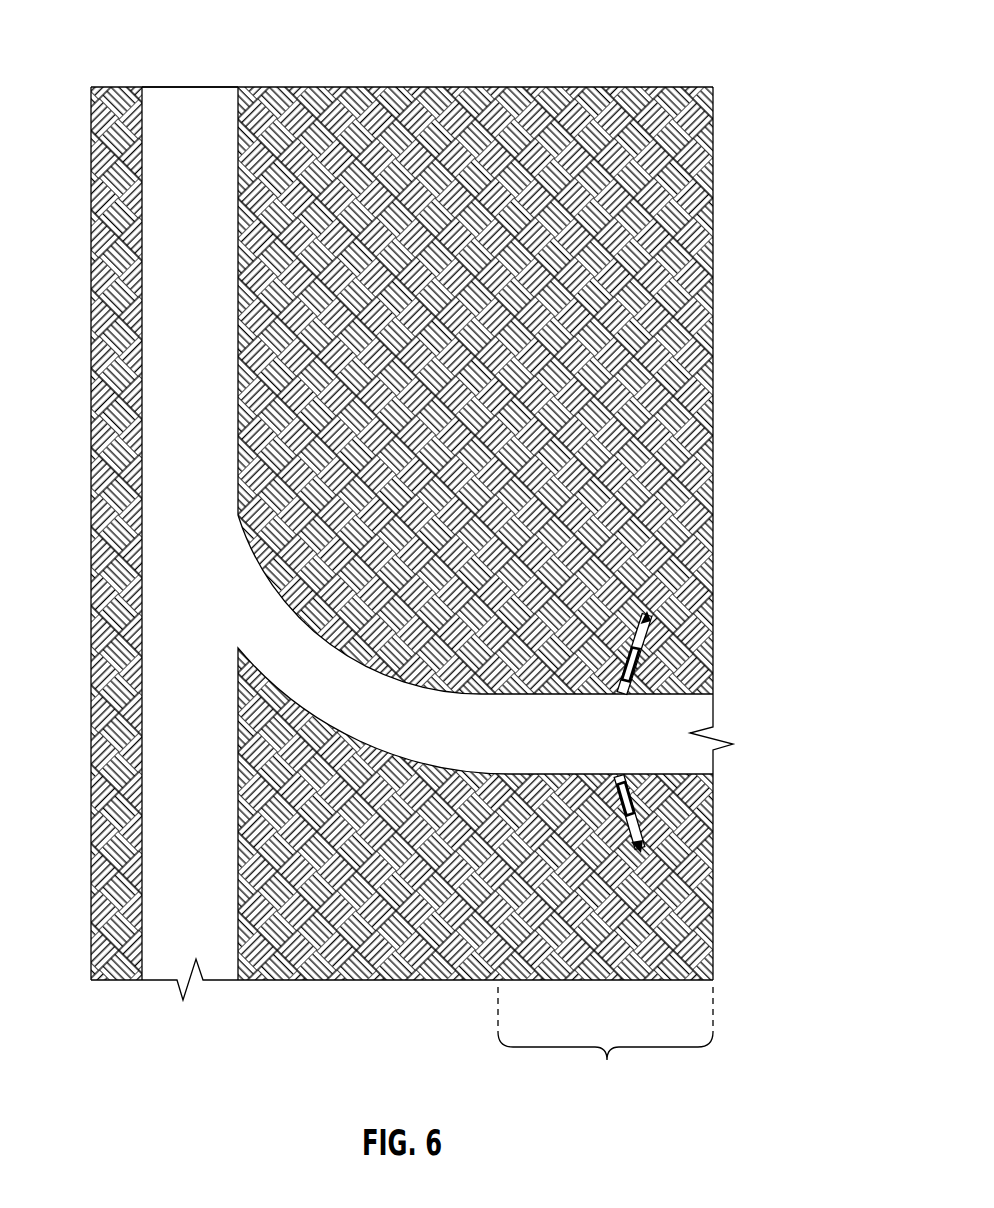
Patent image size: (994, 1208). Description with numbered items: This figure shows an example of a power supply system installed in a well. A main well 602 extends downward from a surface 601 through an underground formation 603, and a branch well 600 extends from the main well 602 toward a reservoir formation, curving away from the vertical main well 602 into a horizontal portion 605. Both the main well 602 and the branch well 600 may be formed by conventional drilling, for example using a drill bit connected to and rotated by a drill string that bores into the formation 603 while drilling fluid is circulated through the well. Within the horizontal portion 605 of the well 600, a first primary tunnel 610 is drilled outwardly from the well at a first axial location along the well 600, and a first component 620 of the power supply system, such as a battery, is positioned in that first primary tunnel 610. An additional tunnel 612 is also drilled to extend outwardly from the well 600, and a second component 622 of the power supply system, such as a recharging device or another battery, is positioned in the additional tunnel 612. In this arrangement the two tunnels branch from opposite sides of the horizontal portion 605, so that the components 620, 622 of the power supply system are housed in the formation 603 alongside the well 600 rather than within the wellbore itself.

The well 600 is at (493, 751).
The surface 601 is at (592, 86).
The main well 602 is at (208, 859).
The underground formation 603 is at (375, 879).
The horizontal portion 605 is at (605, 1043).
The first primary tunnel 610 is at (643, 845).
The additional tunnel 612 is at (640, 628).
The first component 620 is at (624, 797).
The second component 622 is at (628, 671).